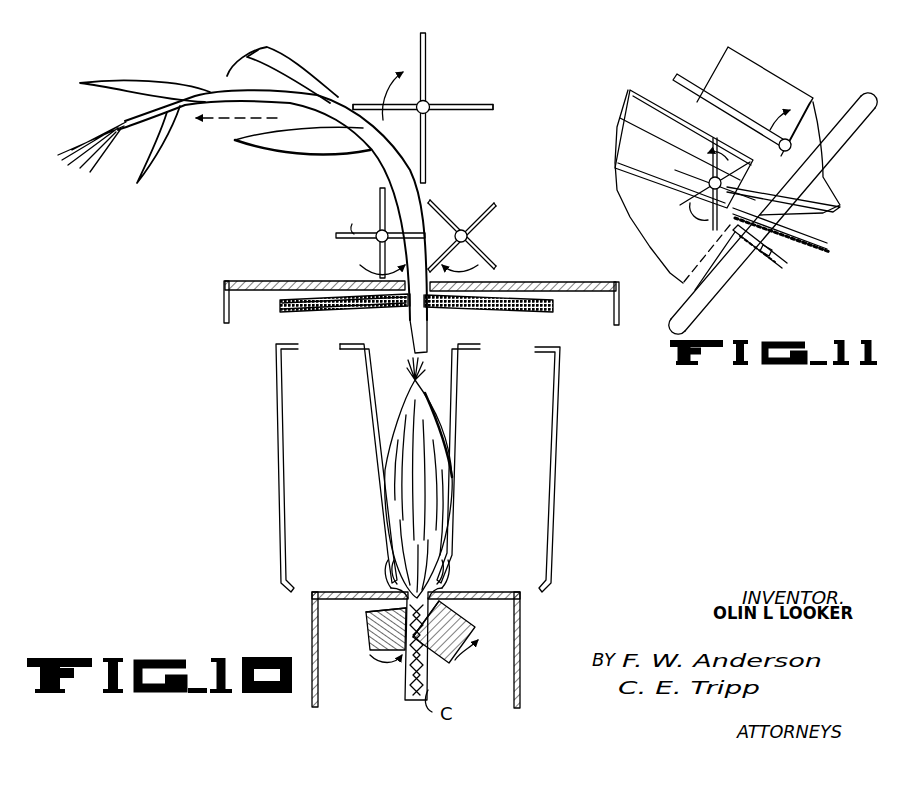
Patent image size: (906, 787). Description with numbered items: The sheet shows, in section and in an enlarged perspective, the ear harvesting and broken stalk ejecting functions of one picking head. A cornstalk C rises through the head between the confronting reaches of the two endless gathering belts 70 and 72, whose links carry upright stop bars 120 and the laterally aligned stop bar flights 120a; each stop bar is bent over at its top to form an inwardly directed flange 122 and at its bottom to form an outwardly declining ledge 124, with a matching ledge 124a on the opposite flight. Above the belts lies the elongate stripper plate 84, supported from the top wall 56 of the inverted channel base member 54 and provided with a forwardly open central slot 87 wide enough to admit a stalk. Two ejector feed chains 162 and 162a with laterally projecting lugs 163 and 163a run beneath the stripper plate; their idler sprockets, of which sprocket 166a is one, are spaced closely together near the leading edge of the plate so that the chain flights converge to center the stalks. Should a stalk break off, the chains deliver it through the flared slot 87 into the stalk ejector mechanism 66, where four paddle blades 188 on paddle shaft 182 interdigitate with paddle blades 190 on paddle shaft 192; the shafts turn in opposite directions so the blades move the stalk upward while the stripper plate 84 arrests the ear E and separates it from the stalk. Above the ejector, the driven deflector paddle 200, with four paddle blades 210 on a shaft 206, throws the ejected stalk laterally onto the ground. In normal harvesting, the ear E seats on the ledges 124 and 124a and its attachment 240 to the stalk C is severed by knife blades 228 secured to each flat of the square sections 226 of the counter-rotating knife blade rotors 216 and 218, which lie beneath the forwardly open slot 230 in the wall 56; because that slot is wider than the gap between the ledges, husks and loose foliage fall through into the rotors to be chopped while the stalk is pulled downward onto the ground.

In FIG. 10, the base member 54 is at (522, 662).
In FIG. 10, the top wall 56 is at (520, 596).
In FIG. 10, the stalk ejector mechanism 66 is at (335, 224).
In FIG. 11, the stalk ejector mechanism 66 is at (783, 66).
In FIG. 10, the gathering belt 70 is at (273, 418).
In FIG. 10, the gathering belt 72 is at (561, 431).
In FIG. 10, the stripper plate 84 is at (516, 286).
In FIG. 11, the stripper plate 84 is at (633, 203).
In FIG. 10, the central slot 87 is at (425, 304).
In FIG. 11, the central slot 87 is at (722, 205).
In FIG. 10, the stop bar 120 is at (372, 438).
In FIG. 10, the stop bar flight 120a is at (555, 390).
In FIG. 10, the inwardly directed flange 122 is at (362, 345).
In FIG. 10, the outwardly declining ledge 124 is at (388, 556).
In FIG. 10, the stop bar ledge 124a is at (447, 557).
In FIG. 10, the ejector feed chain 162 is at (290, 303).
In FIG. 11, the ejector feed chain 162 is at (773, 277).
In FIG. 10, the ejector feed chain 162a is at (550, 311).
In FIG. 11, the ejector feed chain 162a is at (820, 236).
In FIG. 10, the lug 163 is at (410, 311).
In FIG. 11, the lug 163 is at (775, 252).
In FIG. 11, the lug 163a is at (760, 189).
In FIG. 11, the idler sprocket 166a is at (797, 216).
In FIG. 10, the paddle shaft 182 is at (376, 241).
In FIG. 11, the paddle shaft 182 is at (623, 122).
In FIG. 10, the paddle blade 188 is at (379, 205).
In FIG. 11, the paddle blade 188 is at (618, 149).
In FIG. 10, the paddle blade 190 is at (490, 215).
In FIG. 11, the paddle blade 190 is at (747, 63).
In FIG. 10, the paddle shaft 192 is at (488, 243).
In FIG. 11, the paddle shaft 192 is at (707, 85).
In FIG. 10, the deflector paddle 200 is at (433, 58).
In FIG. 10, the shaft 206 is at (432, 102).
In FIG. 10, the paddle blade 210 is at (418, 46).
In FIG. 10, the knife blade rotor 216 is at (365, 652).
In FIG. 10, the knife blade rotor 218 is at (476, 630).
In FIG. 10, the square section 226 is at (430, 655).
In FIG. 10, the knife blade 228 is at (367, 620).
In FIG. 10, the slot 230 is at (405, 590).
In FIG. 10, the attachment 240 is at (436, 590).
In FIG. 10, the cornstalk C is at (211, 92).
In FIG. 11, the cornstalk C is at (846, 99).
In FIG. 10, the ear E is at (436, 442).